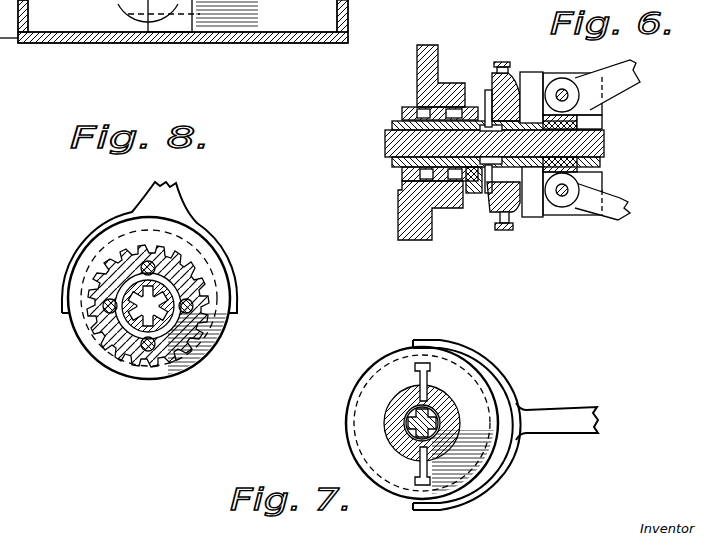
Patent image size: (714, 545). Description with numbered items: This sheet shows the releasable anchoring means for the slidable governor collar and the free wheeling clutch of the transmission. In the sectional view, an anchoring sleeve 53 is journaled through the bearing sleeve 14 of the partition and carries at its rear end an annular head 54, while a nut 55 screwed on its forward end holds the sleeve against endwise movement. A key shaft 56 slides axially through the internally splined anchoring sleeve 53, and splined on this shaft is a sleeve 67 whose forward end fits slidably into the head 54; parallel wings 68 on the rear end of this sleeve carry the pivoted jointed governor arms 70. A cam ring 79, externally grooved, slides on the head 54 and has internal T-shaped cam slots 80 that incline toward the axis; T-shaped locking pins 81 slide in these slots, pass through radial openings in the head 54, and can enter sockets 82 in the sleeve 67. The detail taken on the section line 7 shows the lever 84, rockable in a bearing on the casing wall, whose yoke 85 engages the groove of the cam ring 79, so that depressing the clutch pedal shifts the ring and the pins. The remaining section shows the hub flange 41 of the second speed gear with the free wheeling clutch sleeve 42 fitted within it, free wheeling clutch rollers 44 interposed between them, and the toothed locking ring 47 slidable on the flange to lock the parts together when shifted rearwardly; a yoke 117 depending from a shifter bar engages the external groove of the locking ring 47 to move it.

In FIG. 6, the section line 7— 7 is at (487, 64).
In FIG. 6, the bearing sleeve 14 is at (449, 200).
In FIG. 8, the hub flange 41 is at (183, 278).
In FIG. 8, the free wheeling clutch sleeve 42 is at (110, 348).
In FIG. 8, the free wheeling clutch rollers 44 is at (147, 350).
In FIG. 8, the locking ring 47 is at (201, 254).
In FIG. 6, the anchoring sleeve 53 is at (431, 100).
In FIG. 6, the annular head 54 is at (477, 194).
In FIG. 7, the annular head 54 is at (451, 401).
In FIG. 6, the nut 55 is at (410, 110).
In FIG. 7, the key shaft 56 is at (408, 421).
In FIG. 6, the sleeve 67 is at (582, 122).
In FIG. 6, the parallel wings 68 is at (598, 103).
In FIG. 6, the jointed governor arms 70 is at (612, 197).
In FIG. 6, the cam ring 79 is at (525, 90).
In FIG. 7, the cam ring 79 is at (372, 382).
In FIG. 6, the T-shaped cam slots 80 is at (505, 80).
In FIG. 7, the T-shaped cam slots 80 is at (431, 387).
In FIG. 6, the T-shaped locking pins 81 is at (485, 100).
In FIG. 7, the T-shaped locking pins 81 is at (415, 467).
In FIG. 6, the sockets 82 is at (524, 170).
In FIG. 7, the lever 84 is at (570, 421).
In FIG. 6, the yoke 85 is at (507, 232).
In FIG. 7, the yoke 85 is at (517, 394).
In FIG. 8, the yoke 117 is at (170, 196).